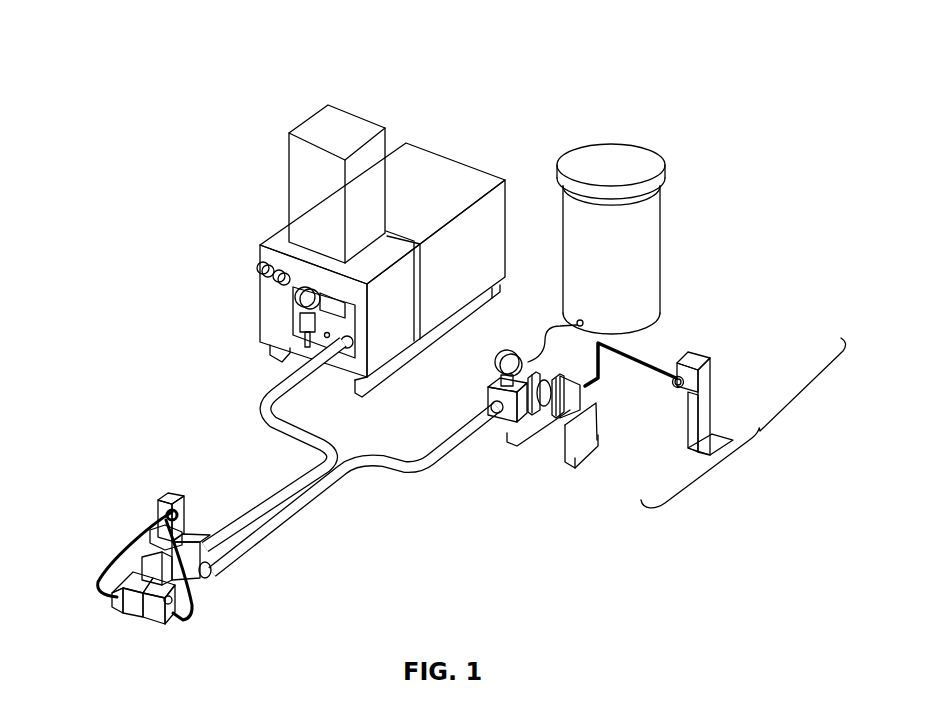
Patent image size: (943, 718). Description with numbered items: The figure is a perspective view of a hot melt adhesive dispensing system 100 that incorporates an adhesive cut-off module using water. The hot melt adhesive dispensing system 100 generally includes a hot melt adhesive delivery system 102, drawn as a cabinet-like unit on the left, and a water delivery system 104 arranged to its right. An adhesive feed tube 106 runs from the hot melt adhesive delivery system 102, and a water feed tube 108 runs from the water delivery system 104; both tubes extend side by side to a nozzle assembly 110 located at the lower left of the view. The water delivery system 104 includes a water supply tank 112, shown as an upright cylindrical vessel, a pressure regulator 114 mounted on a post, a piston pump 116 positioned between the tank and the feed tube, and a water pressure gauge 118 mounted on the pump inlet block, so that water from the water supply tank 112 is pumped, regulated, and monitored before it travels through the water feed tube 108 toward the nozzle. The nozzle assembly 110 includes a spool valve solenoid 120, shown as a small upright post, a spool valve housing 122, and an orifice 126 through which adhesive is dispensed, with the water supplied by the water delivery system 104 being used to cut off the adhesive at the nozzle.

The hot melt adhesive dispensing system 100 is at (556, 63).
The hot melt adhesive delivery system 102 is at (437, 183).
The water delivery system 104 is at (743, 423).
The adhesive feed tube 106 is at (277, 390).
The water feed tube 108 is at (435, 462).
The nozzle assembly 110 is at (119, 565).
The water supply tank 112 is at (655, 206).
The pressure regulator 114 is at (695, 368).
The piston pump 116 is at (572, 402).
The water pressure gauge 118 is at (493, 368).
The spool valve solenoid 120 is at (176, 492).
The spool valve housing 122 is at (117, 600).
The orifice 126 is at (133, 612).